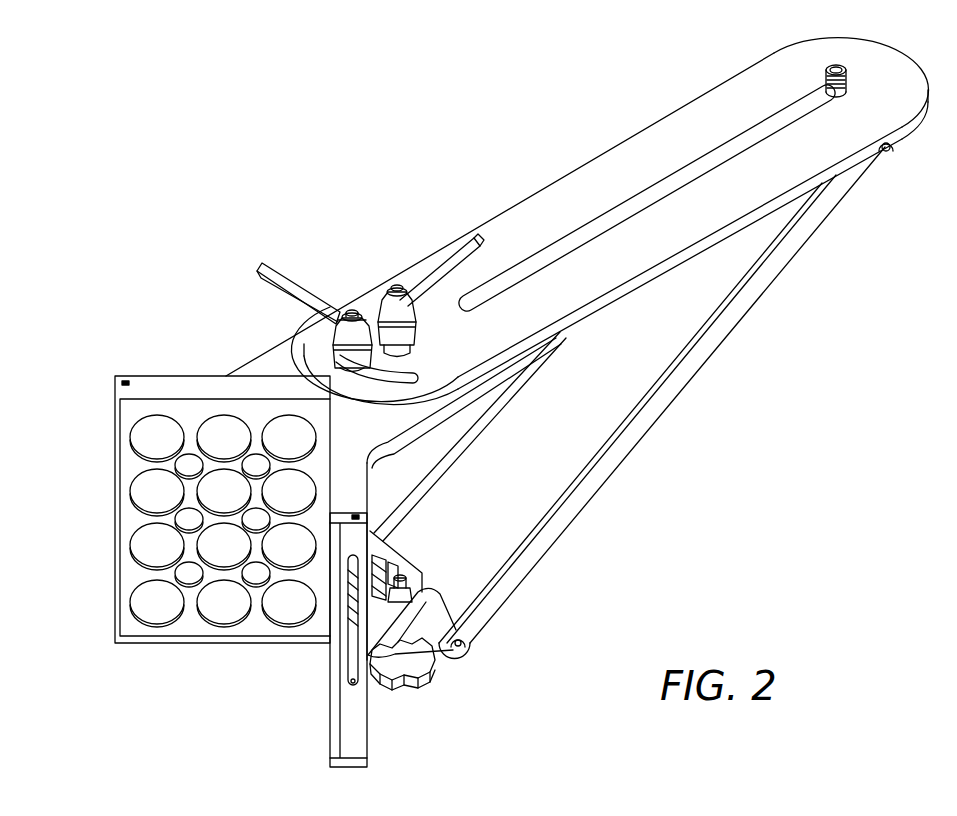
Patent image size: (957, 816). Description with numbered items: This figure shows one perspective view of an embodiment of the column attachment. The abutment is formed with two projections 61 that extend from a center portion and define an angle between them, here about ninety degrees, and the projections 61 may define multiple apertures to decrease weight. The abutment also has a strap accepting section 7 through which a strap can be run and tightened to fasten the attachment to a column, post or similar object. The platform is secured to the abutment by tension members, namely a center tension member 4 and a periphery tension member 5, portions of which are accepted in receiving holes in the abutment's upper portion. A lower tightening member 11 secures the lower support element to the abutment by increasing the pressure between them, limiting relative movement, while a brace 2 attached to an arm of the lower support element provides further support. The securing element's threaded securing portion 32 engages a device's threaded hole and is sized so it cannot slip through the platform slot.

The brace 2 is at (725, 337).
The center tension member 4 is at (455, 256).
The periphery tension member 5 is at (275, 280).
The strap accepting section 7 is at (355, 688).
The lower tightening member 11 is at (408, 675).
The securing portion 32 is at (844, 66).
The projection 61 is at (282, 645).